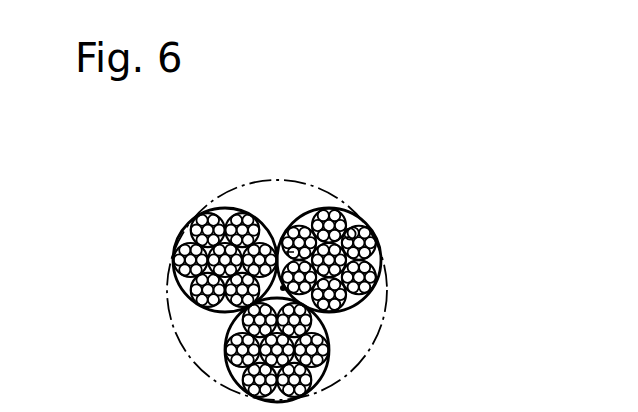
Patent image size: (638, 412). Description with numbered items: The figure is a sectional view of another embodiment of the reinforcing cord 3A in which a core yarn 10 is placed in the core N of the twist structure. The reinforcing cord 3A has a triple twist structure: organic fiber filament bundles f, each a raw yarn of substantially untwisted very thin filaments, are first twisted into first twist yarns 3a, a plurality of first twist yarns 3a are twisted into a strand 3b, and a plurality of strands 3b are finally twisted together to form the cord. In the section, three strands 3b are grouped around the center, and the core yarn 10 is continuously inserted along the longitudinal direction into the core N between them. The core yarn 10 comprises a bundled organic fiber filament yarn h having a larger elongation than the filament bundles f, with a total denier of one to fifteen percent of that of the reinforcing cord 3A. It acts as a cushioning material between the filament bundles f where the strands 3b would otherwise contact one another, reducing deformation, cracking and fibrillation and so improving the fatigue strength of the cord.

The reinforcing cord 3A is at (330, 179).
The first twist yarn 3a is at (377, 243).
The strand 3b is at (373, 287).
The organic fiber filament bundle f is at (353, 233).
The bundled organic fiber filament yarn h is at (290, 250).
The core N is at (327, 313).
The core yarn 10 is at (295, 267).